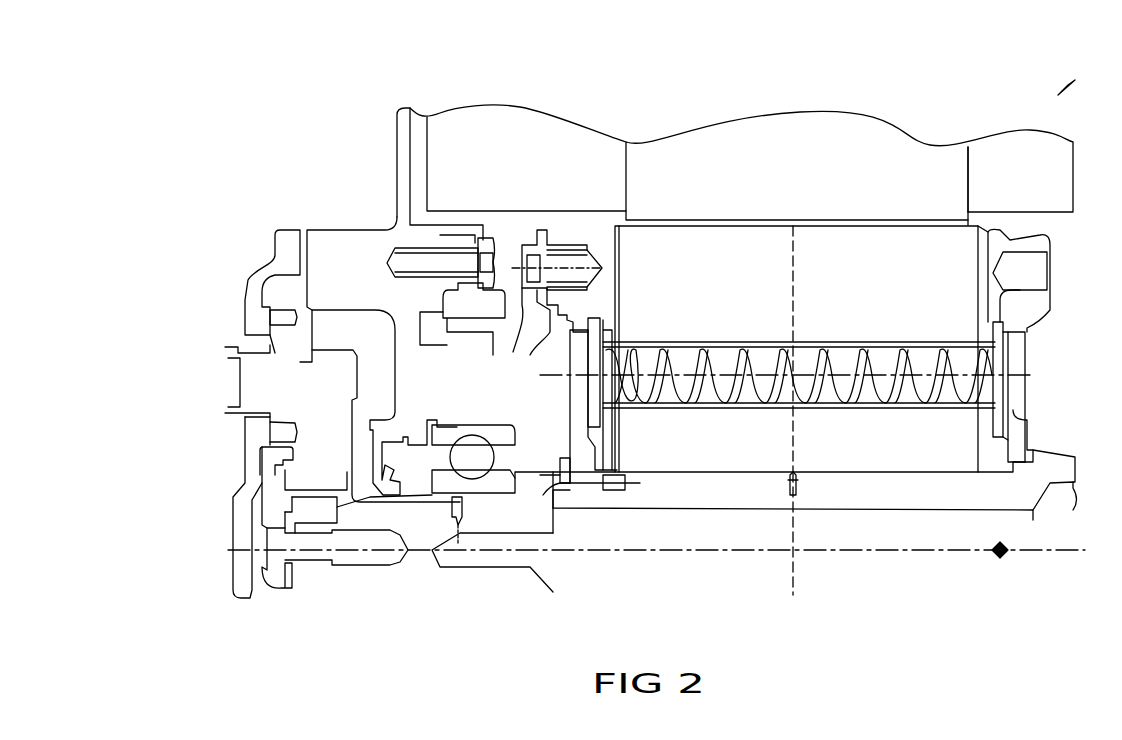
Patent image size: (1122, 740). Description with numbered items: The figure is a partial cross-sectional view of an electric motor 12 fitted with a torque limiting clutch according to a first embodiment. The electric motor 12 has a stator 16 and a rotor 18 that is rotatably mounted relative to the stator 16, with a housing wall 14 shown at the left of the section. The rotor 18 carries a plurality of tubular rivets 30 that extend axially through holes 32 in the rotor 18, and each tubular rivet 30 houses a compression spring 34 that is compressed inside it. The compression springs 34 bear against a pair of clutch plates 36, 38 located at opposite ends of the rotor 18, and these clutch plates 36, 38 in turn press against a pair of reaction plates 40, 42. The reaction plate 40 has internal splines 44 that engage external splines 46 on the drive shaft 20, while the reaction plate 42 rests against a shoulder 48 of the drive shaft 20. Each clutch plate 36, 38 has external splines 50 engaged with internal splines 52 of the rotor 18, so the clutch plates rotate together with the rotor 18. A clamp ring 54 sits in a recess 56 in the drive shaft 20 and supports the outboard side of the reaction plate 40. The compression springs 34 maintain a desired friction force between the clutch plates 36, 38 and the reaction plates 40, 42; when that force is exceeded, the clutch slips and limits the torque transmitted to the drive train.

The electric motor 12 is at (1072, 82).
The housing wall 14 is at (400, 162).
The stator 16 is at (897, 150).
The rotor 18 is at (933, 245).
The drive shaft 20 is at (928, 490).
The tubular rivets 30 is at (818, 342).
The holes 32 is at (902, 352).
The compression spring 34 is at (686, 345).
The clutch plate 36 is at (590, 425).
The clutch plate 38 is at (1003, 345).
The reaction plate 40 is at (578, 392).
The reaction plate 42 is at (1013, 375).
The internal splines 44 is at (580, 475).
The external splines 46 is at (612, 475).
The shoulder 48 is at (1013, 410).
The external splines 50 is at (592, 300).
The internal splines 52 is at (580, 332).
The clamp ring 54 is at (560, 463).
The recess 56 is at (557, 470).